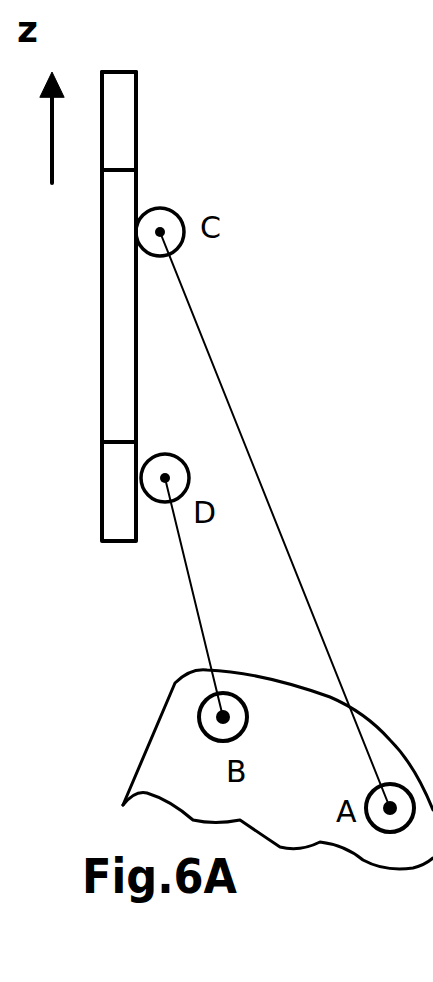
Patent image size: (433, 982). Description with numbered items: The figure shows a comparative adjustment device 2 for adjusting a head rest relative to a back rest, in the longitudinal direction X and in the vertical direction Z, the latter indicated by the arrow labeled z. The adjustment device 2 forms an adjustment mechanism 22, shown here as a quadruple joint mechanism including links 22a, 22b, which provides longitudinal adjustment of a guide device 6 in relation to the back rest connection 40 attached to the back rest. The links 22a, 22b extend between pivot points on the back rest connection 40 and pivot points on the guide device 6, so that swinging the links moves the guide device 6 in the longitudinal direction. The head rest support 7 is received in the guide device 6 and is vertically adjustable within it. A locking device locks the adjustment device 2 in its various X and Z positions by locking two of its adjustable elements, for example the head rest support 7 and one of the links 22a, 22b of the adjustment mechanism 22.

The adjustment device 2 is at (325, 120).
The guide device 6 is at (101, 318).
The head rest support 7 is at (138, 97).
The adjustment mechanism 22 is at (240, 520).
The link 22a is at (297, 573).
The link 22b is at (193, 592).
The back rest connection 40 is at (167, 748).